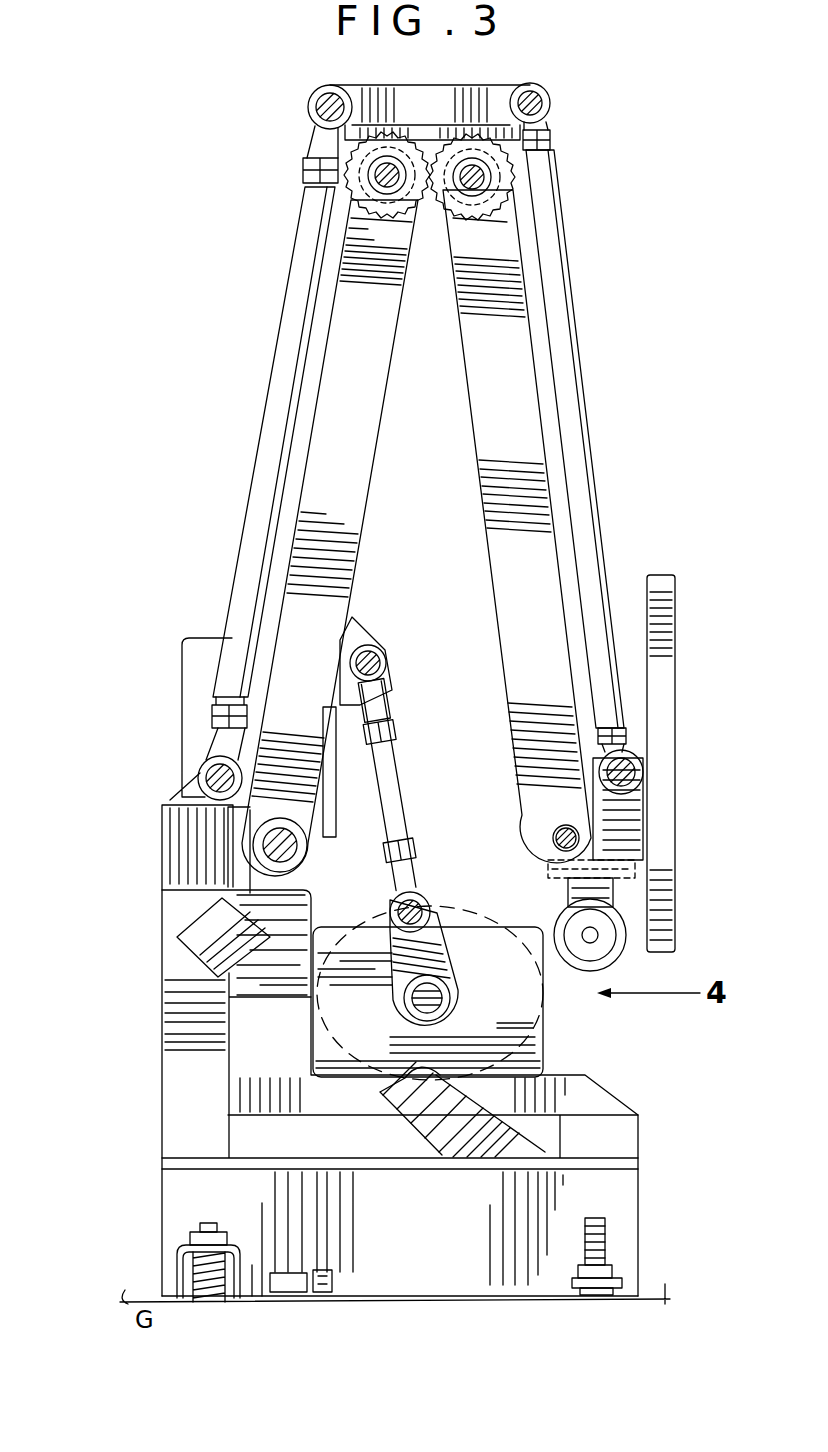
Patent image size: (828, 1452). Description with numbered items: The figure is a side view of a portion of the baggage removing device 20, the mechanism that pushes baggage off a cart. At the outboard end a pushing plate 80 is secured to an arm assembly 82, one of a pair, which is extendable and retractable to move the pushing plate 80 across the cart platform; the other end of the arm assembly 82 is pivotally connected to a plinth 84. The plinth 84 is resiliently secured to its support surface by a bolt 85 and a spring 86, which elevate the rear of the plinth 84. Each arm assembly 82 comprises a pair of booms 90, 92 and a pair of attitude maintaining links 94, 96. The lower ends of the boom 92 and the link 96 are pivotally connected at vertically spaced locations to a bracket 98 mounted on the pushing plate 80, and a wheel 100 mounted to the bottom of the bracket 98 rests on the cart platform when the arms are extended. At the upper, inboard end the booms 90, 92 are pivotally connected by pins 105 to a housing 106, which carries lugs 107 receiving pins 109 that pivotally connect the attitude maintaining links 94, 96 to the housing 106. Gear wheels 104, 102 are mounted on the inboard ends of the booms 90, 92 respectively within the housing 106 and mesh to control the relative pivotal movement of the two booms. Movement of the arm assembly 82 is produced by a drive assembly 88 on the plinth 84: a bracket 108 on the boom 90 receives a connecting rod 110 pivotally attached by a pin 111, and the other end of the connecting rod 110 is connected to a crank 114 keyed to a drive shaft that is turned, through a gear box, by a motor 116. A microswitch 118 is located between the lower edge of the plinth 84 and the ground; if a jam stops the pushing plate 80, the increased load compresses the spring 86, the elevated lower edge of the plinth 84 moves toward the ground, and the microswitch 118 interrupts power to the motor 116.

The baggage removing device 20 is at (605, 357).
The pushing plate 80 is at (675, 770).
The arm assembly 82 is at (235, 402).
The plinth 84 is at (140, 970).
The bolt 85 is at (590, 1296).
The spring 86 is at (207, 1298).
The drive assembly 88 is at (398, 622).
The boom 90 is at (373, 462).
The boom 92 is at (510, 655).
The attitude maintaining link 94 is at (285, 300).
The attitude maintaining link 96 is at (572, 310).
The bracket 98 is at (650, 830).
The wheel 100 is at (605, 955).
The gear wheel 102 is at (478, 200).
The gear wheel 104 is at (300, 197).
The pin 105 is at (292, 170).
The housing 106 is at (565, 139).
The lug 107 is at (315, 140).
The bracket 108 is at (365, 630).
The pin 109 is at (550, 101).
The connecting rod 110 is at (410, 812).
The pin 111 is at (390, 660).
The crank 114 is at (440, 906).
The motor 116 is at (188, 660).
The microswitch 118 is at (303, 1272).